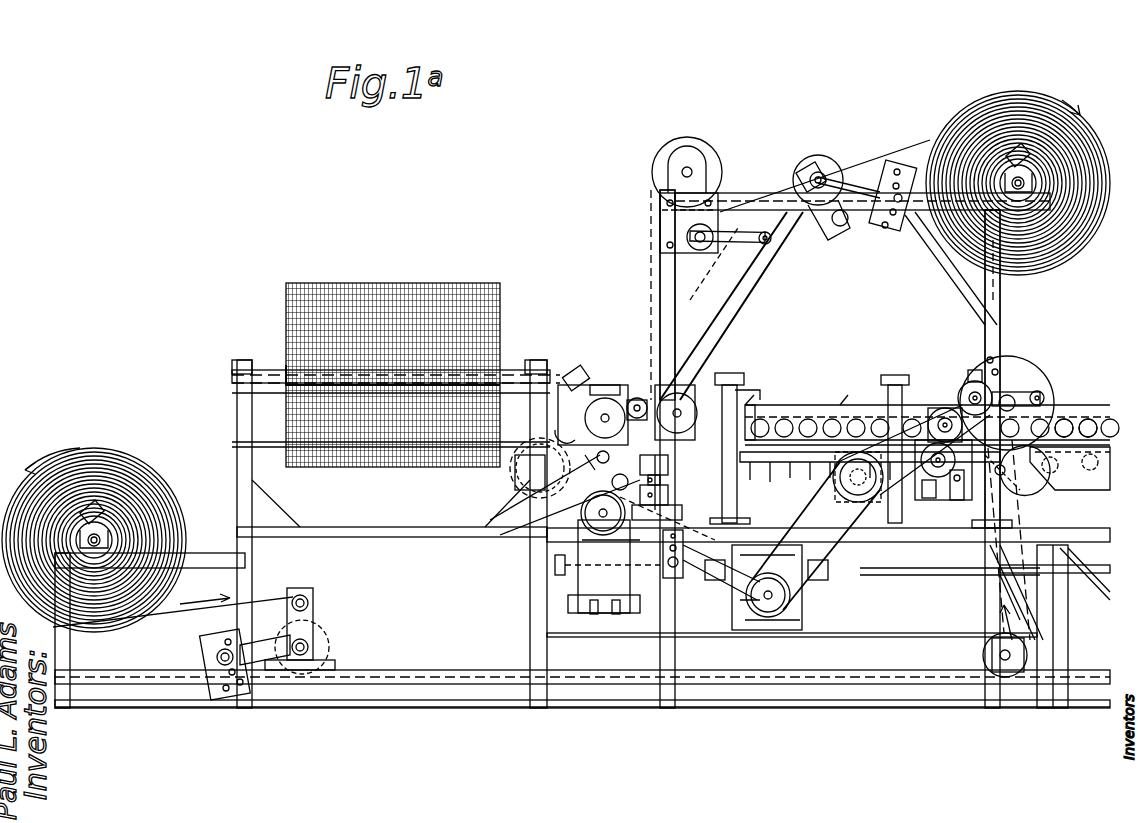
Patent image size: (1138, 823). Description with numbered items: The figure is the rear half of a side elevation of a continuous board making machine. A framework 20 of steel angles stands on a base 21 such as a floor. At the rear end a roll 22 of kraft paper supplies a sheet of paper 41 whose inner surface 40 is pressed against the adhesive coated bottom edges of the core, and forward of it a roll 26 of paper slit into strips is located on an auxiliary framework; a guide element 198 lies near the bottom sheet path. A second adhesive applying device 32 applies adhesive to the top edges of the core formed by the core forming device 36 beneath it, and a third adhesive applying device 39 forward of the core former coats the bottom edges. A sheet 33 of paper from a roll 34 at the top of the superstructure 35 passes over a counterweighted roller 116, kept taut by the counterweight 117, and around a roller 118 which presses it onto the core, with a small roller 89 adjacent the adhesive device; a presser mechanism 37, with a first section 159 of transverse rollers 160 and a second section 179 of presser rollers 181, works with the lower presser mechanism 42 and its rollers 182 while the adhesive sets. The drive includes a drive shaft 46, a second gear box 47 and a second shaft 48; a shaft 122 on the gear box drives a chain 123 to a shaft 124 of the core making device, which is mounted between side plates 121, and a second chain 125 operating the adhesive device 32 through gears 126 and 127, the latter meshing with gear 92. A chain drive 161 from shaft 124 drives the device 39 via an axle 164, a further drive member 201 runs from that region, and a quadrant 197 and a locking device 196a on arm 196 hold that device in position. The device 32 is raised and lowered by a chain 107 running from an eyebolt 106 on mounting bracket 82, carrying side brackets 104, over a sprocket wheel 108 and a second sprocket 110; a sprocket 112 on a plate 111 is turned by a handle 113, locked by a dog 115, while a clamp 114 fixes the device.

The framework 20 is at (370, 545).
The base 21 is at (455, 700).
The roll of kraft paper 22 is at (110, 458).
The roll of paper 26 is at (347, 275).
The second adhesive applying device 32 is at (563, 380).
The sheet of paper 33 is at (709, 340).
The roll 34 is at (1042, 104).
The superstructure 35 is at (1013, 312).
The core forming device 36 is at (760, 470).
The presser mechanism 37 is at (814, 393).
The third adhesive applying device 39 is at (945, 505).
The inner surface 40 is at (1010, 612).
The sheet of paper 41 is at (185, 628).
The second presser mechanism 42 is at (1092, 488).
The drive shaft 46 is at (910, 575).
The second gear box 47 is at (795, 614).
The second shaft 48 is at (560, 585).
The mounting bracket 82 is at (545, 486).
The guide roller 89 is at (637, 396).
The gear 92 is at (603, 385).
The side brackets 104 is at (670, 480).
The eyebolt 106 is at (680, 393).
The chain 107 is at (651, 270).
The sprocket wheel 108 is at (683, 138).
The second sprocket 110 is at (670, 578).
The plate 111 is at (677, 295).
The sprocket 112 is at (700, 250).
The handle 113 is at (770, 243).
The clamp 114 is at (680, 495).
The dog 115 is at (690, 230).
The counterweighted roller 116 is at (818, 158).
The counterweight 117 is at (893, 165).
The roller 118 is at (700, 392).
The side plates 121 is at (812, 460).
The shaft 122 is at (768, 615).
The chain 123 is at (848, 560).
The shaft 124 is at (845, 492).
The second chain 125 is at (603, 536).
The gear 126 is at (540, 500).
The gear 127 is at (540, 462).
The first section 159 is at (770, 410).
The transverse rollers 160 is at (848, 410).
The chain drive 161 is at (898, 395).
The axle 164 is at (975, 382).
The second section 179 is at (1047, 405).
The presser rollers 181 is at (1080, 435).
The rollers 182 is at (1060, 460).
The arm 196 is at (1005, 380).
The locking device 196a is at (1025, 395).
The quadrant 197 is at (1008, 358).
The tension roller assembly 198 is at (330, 640).
The drive chain 201 is at (975, 515).